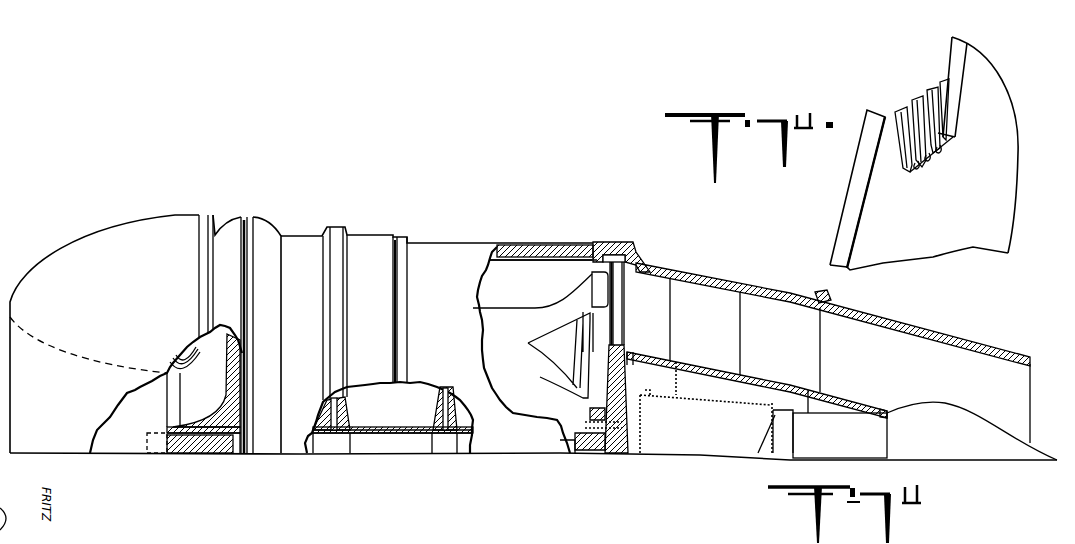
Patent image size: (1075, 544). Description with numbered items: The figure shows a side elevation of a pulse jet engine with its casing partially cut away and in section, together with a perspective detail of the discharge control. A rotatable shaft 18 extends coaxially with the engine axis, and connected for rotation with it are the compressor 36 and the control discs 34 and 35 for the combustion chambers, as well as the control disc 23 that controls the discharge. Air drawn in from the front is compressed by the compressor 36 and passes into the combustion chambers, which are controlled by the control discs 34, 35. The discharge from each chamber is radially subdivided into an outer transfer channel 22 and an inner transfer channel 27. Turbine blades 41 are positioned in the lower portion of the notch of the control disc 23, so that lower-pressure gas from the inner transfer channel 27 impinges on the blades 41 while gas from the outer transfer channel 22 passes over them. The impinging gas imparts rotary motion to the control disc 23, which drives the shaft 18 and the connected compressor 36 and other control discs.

In FIG. 11, the rotatable shaft 18 is at (182, 453).
In FIG. 11, the outer transfer channel 22 is at (573, 313).
In FIG. 11, the control disc 23 is at (617, 400).
In FIG. 11A, the control disc 23 is at (873, 197).
In FIG. 11, the inner transfer channel 27 is at (574, 349).
In FIG. 11, the control disc 34 is at (347, 422).
In FIG. 11, the control disc 35 is at (457, 420).
In FIG. 11, the compressor 36 is at (212, 402).
In FIG. 11, the turbine blades 41 is at (622, 331).
In FIG. 11A, the turbine blades 41 is at (916, 125).